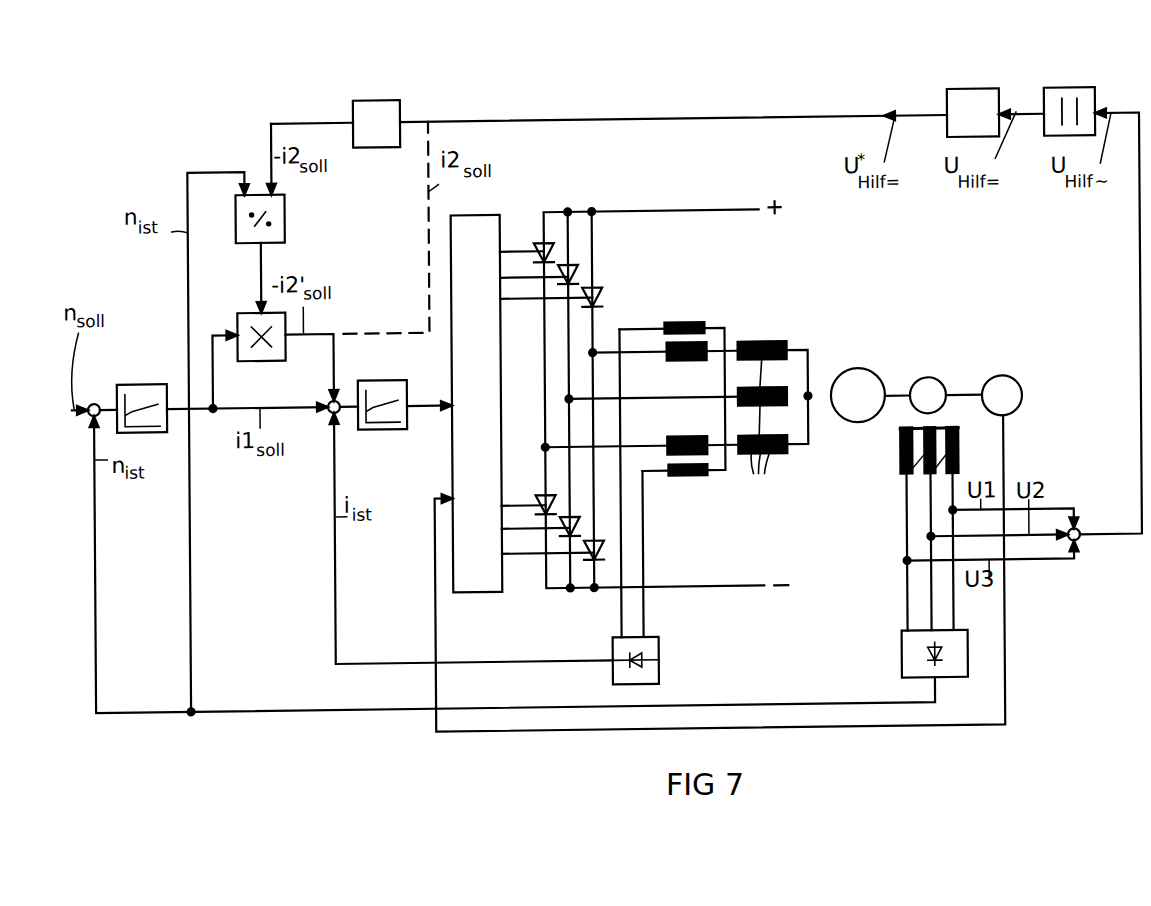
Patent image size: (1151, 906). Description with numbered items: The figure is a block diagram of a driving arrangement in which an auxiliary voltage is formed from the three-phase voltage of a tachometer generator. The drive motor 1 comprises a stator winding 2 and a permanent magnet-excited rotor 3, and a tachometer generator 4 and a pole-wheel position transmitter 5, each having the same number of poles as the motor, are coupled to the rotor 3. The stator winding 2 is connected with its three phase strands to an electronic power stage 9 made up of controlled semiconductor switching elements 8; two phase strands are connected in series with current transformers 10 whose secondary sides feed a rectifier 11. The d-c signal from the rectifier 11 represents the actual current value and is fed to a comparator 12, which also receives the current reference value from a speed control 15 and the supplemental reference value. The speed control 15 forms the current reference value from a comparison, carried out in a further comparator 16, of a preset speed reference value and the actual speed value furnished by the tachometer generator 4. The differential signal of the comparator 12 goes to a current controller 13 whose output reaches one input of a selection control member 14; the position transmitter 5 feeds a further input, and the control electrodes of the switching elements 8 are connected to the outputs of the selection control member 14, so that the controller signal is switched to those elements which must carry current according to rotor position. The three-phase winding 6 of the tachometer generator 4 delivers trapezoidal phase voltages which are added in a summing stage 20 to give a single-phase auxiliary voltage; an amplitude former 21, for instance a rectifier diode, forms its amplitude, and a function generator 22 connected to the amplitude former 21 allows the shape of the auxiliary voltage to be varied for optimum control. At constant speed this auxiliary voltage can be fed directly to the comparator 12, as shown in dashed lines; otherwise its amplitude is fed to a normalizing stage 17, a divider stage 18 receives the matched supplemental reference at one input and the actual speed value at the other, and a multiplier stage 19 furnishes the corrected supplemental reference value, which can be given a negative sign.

The drive motor 1 is at (756, 294).
The stator winding 2 is at (691, 420).
The permanent magnet-excited rotor 3 is at (840, 381).
The tachometer generator 4 is at (912, 412).
The pole-wheel position transmitter 5 is at (1002, 384).
The winding 6 is at (950, 464).
The controlled semiconductor switching elements 8 is at (598, 291).
The electronic power stage 9 is at (566, 388).
The current transformers 10 is at (680, 441).
The rectifier 11 is at (657, 664).
The comparator 12 is at (338, 414).
The current controller 13 is at (386, 381).
The selection control member 14 is at (475, 594).
The speed control 15 is at (141, 382).
The further comparator 16 is at (94, 401).
The normalizing stage 17 is at (375, 107).
The divider stage 18 is at (286, 218).
The multiplier stage 19 is at (243, 312).
The summing stage 20 is at (1080, 550).
The amplitude former 21 is at (1062, 99).
The function generator 22 is at (971, 99).